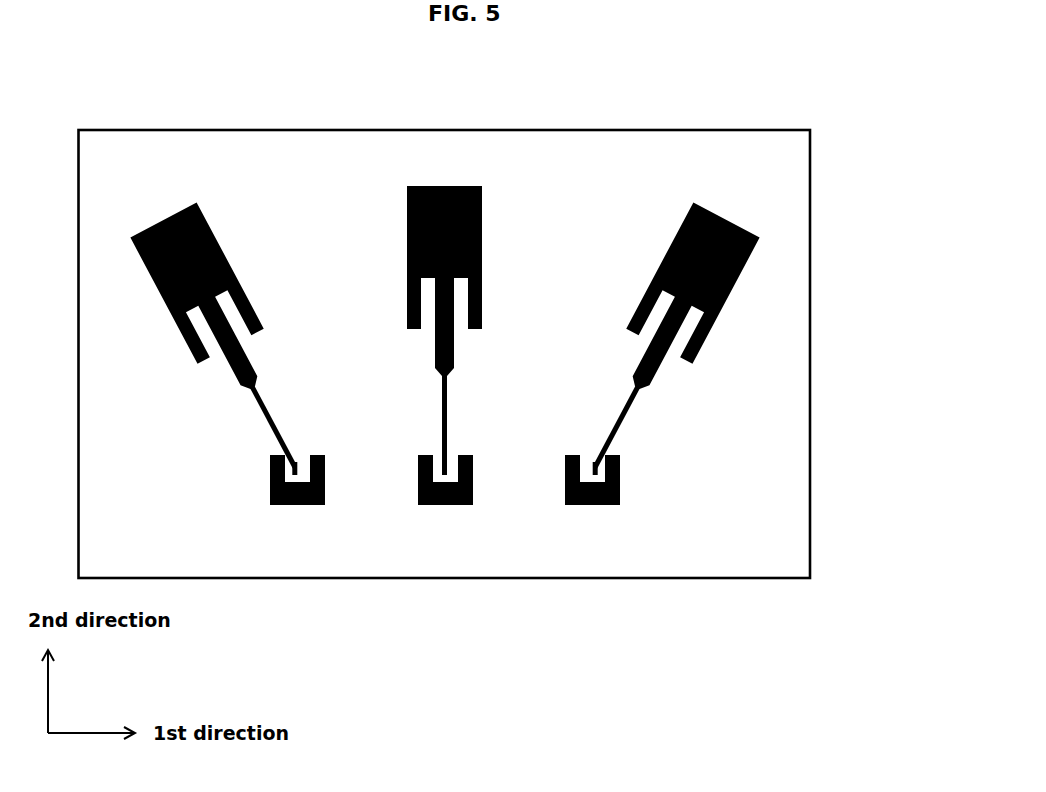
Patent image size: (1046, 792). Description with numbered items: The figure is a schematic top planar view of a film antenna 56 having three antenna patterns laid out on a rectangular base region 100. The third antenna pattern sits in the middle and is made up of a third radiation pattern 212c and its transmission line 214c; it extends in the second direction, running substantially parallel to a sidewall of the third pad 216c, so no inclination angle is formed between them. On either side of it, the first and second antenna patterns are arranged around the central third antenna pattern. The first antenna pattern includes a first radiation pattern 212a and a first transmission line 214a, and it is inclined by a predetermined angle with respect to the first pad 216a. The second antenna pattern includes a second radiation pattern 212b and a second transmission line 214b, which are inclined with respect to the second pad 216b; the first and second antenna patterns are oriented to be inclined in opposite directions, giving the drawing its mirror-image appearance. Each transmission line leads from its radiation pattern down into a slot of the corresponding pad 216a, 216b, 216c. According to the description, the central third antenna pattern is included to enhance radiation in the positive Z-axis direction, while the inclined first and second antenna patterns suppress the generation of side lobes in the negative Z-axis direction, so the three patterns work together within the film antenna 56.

The film antenna 56 is at (111, 63).
The substrate 100 is at (807, 198).
The first radiation pattern 212a is at (165, 218).
The second radiation pattern 212b is at (727, 218).
The third radiation pattern 212c is at (445, 186).
The first transmission line 214a is at (280, 420).
The second transmission line 214b is at (625, 410).
The second transmission line 214c is at (450, 412).
The first pad 216a is at (292, 505).
The second pad 216b is at (588, 505).
The third pad 216c is at (442, 505).